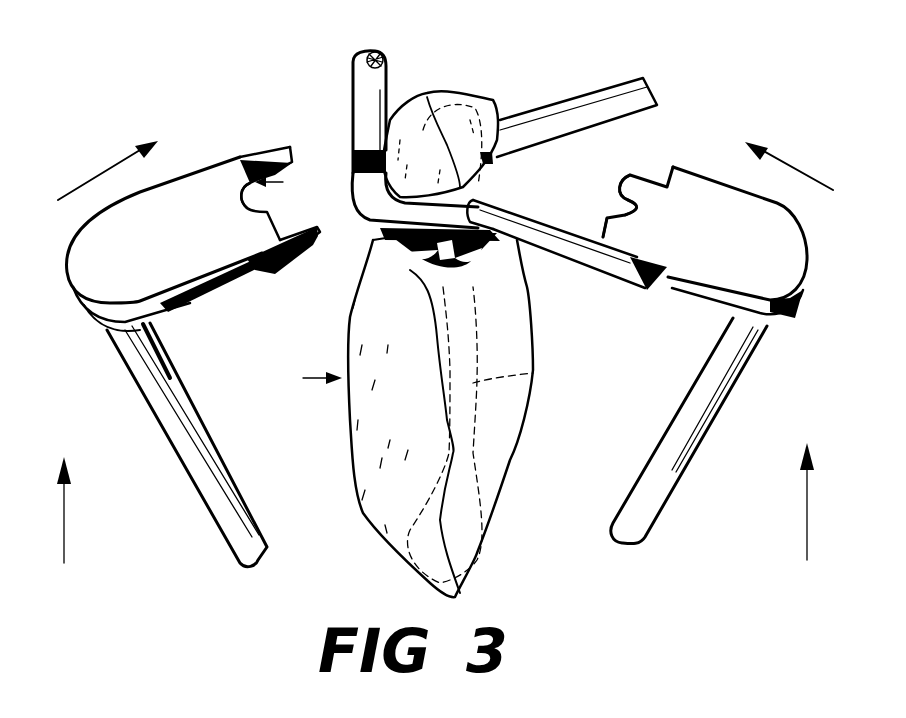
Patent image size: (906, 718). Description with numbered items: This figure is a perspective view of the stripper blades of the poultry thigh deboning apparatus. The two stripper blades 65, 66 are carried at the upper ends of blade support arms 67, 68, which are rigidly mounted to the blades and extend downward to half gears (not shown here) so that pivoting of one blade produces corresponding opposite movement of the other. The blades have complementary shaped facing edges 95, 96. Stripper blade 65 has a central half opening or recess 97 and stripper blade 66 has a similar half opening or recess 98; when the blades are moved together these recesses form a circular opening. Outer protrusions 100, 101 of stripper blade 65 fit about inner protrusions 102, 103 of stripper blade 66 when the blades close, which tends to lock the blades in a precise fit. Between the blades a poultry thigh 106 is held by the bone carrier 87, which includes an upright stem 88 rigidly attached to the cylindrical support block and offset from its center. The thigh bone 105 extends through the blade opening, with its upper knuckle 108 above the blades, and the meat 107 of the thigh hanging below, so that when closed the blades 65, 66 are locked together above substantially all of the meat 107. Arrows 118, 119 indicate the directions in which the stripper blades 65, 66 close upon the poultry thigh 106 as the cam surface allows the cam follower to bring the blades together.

The stripper blade 65 is at (80, 239).
The stripper blade 66 is at (781, 225).
The blade support arm 67 is at (167, 423).
The blade support arm 68 is at (687, 437).
The bone carrier 87 is at (357, 184).
The upright stem 88 is at (362, 73).
The facing edge 95 is at (284, 183).
The facing edge 96 is at (592, 235).
The half opening or recess 97 is at (241, 198).
The half opening or recess 98 is at (621, 204).
The outer protrusion 100 is at (283, 127).
The outer protrusion 101 is at (313, 218).
The inner protrusion 102 is at (605, 224).
The inner protrusion 103 is at (630, 176).
The bone 105 is at (533, 375).
The poultry thigh 106 is at (302, 379).
The meat 107 is at (513, 430).
The upper knuckle 108 is at (443, 107).
The arrow 118 is at (108, 170).
The arrow 119 is at (789, 164).